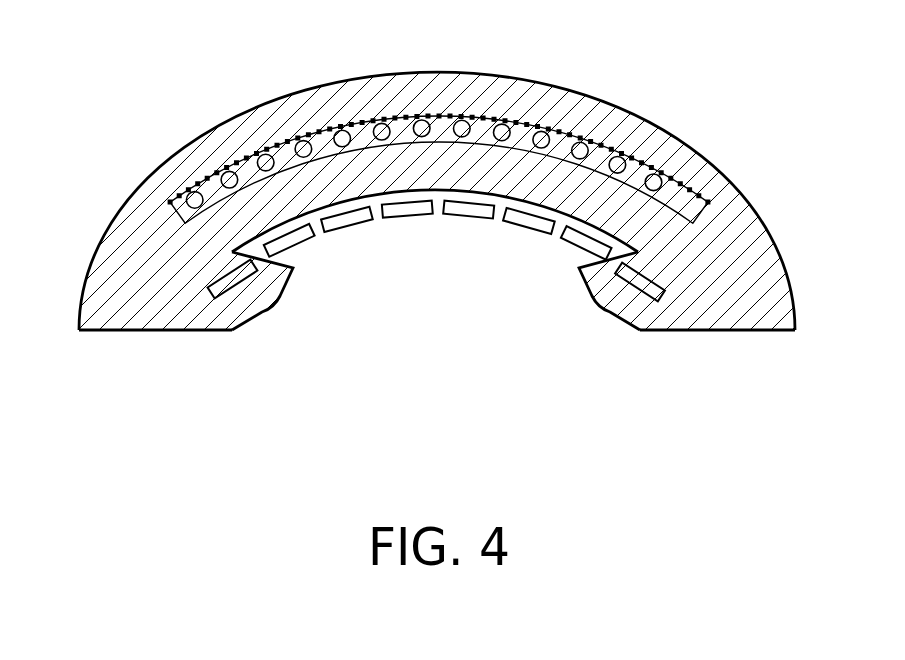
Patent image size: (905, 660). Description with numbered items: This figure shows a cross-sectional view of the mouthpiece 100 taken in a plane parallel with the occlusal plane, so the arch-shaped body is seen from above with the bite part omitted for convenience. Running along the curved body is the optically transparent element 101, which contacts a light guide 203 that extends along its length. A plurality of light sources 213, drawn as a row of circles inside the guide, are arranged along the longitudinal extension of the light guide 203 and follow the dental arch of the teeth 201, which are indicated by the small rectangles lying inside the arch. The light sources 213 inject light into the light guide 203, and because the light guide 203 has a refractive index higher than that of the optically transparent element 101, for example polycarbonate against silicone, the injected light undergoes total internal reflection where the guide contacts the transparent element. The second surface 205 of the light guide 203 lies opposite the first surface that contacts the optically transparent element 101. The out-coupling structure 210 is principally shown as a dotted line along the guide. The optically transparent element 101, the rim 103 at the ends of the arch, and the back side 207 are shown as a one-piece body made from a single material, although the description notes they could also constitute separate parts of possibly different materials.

The mouthpiece 100 is at (134, 88).
The optically transparent element 101 is at (335, 190).
The rim 103 is at (588, 280).
The teeth 201 is at (465, 220).
The light guide 203 is at (280, 147).
The second surface 205 is at (477, 117).
The back side 207 is at (670, 123).
The out-coupling structure 210 is at (402, 90).
The light sources 213 is at (538, 134).